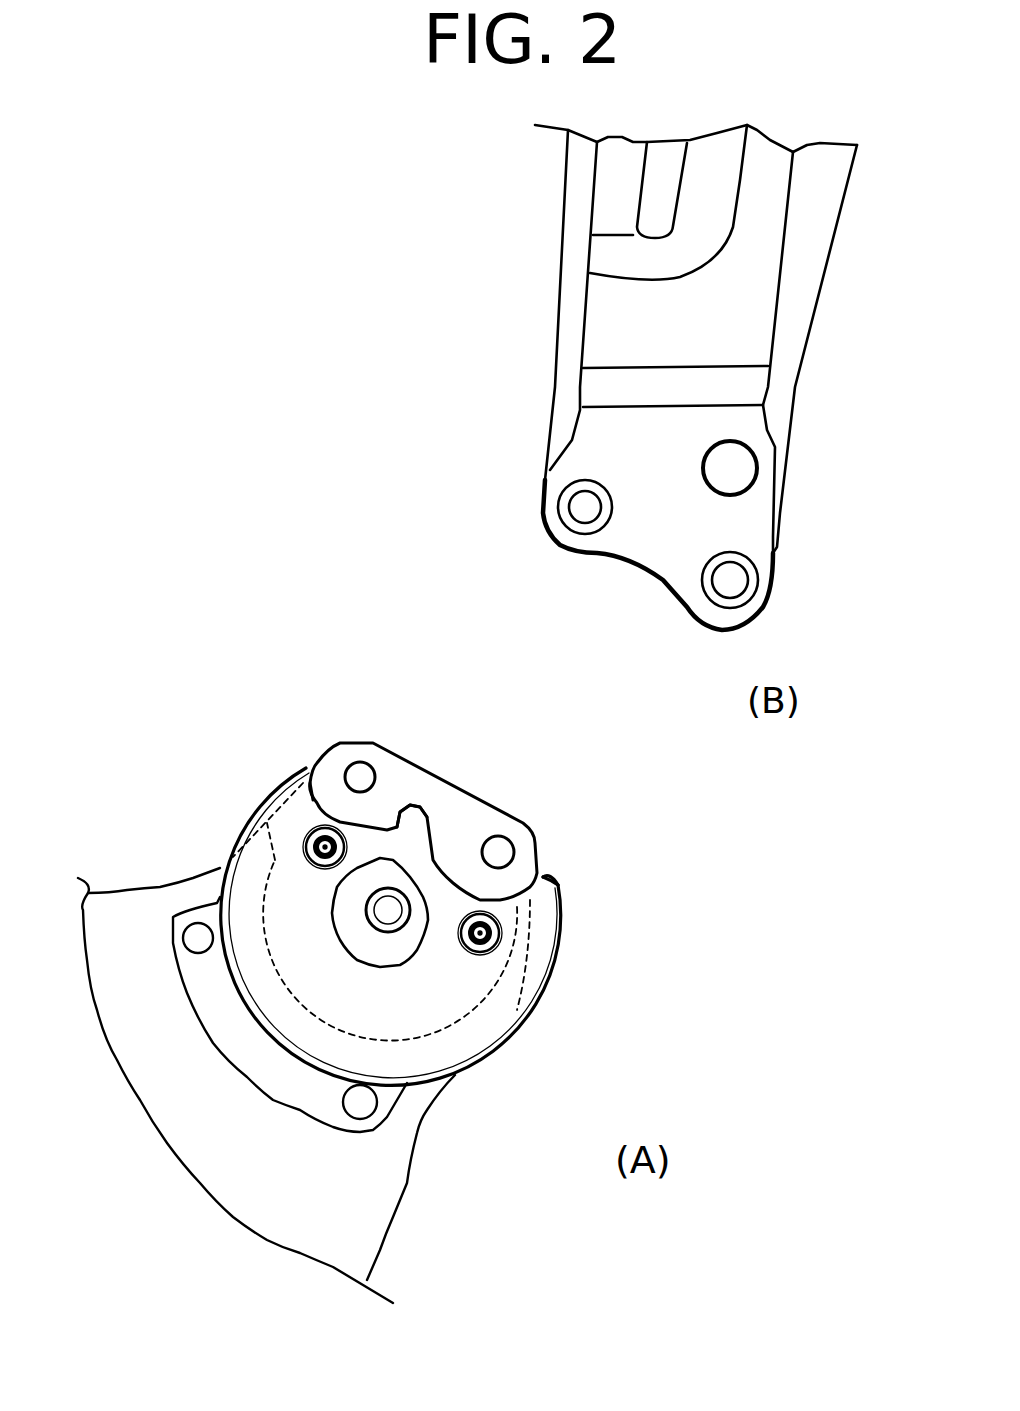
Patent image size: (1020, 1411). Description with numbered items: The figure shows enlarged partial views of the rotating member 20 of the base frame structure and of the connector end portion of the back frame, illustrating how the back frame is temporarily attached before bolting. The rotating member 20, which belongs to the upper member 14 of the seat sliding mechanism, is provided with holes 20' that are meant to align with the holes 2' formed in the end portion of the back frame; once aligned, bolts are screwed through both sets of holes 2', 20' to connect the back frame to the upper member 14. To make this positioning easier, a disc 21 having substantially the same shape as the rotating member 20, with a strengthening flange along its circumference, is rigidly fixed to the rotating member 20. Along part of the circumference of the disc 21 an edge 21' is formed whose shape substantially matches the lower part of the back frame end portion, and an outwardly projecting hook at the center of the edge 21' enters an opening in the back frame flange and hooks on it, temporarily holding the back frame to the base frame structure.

The upper member 14 is at (340, 1238).
The holes 2' is at (659, 550).
The rotating member 20 is at (444, 821).
The holes 20' is at (494, 774).
The disc 21 is at (428, 926).
The edge 21' is at (596, 874).